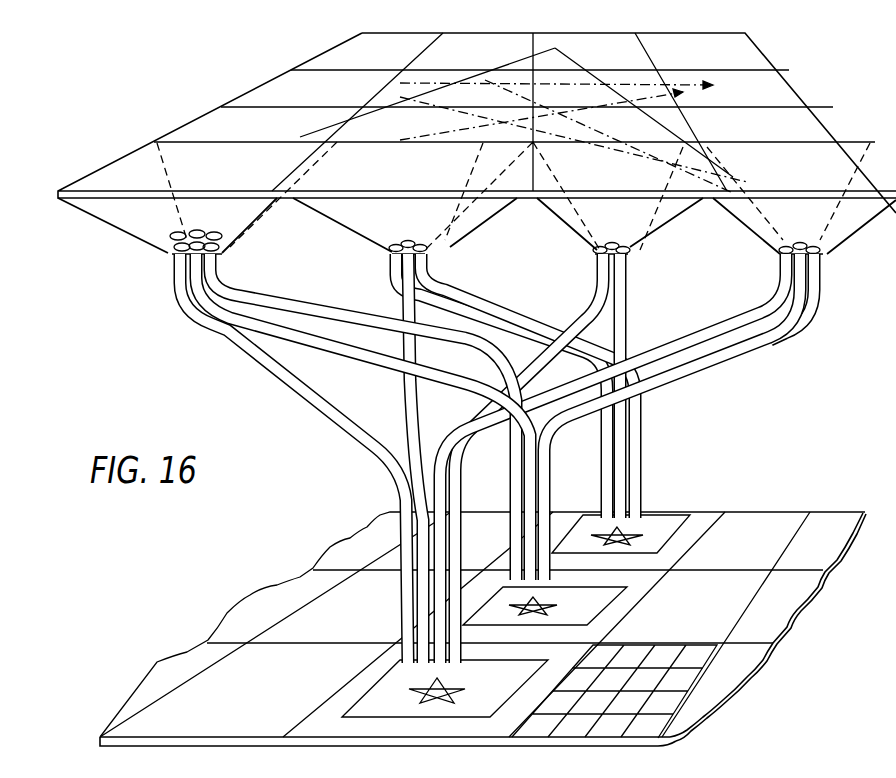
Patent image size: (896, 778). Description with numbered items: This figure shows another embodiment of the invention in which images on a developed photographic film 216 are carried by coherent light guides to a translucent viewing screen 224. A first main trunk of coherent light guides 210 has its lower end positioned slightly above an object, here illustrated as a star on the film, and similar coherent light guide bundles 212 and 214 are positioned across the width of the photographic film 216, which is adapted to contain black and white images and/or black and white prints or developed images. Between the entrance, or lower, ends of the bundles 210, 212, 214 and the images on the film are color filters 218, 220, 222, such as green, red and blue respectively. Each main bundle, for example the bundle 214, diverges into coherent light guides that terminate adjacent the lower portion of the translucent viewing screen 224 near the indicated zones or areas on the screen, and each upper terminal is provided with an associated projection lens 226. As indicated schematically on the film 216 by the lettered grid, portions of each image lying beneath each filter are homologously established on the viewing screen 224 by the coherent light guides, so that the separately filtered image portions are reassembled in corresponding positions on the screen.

The first main trunk of coherent light guides 210 is at (677, 480).
The coherent light guide bundle 212 is at (578, 474).
The coherent light guide bundle 214 is at (401, 508).
The photographic film 216 is at (743, 511).
The color filter 218 is at (668, 520).
The color filter 220 is at (605, 601).
The color filter 222 is at (452, 708).
The translucent viewing screen 224 is at (806, 90).
The projection lens 226 is at (172, 246).